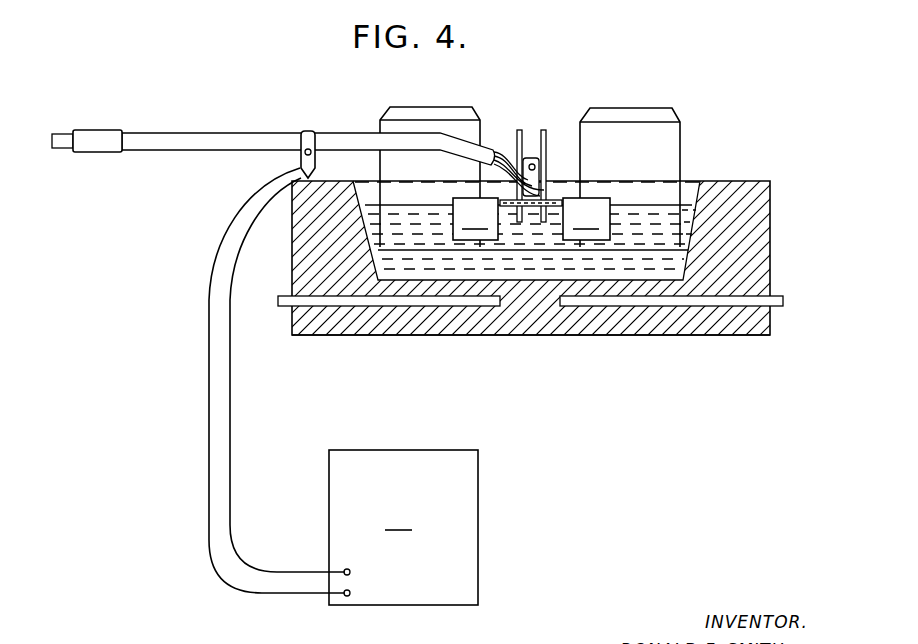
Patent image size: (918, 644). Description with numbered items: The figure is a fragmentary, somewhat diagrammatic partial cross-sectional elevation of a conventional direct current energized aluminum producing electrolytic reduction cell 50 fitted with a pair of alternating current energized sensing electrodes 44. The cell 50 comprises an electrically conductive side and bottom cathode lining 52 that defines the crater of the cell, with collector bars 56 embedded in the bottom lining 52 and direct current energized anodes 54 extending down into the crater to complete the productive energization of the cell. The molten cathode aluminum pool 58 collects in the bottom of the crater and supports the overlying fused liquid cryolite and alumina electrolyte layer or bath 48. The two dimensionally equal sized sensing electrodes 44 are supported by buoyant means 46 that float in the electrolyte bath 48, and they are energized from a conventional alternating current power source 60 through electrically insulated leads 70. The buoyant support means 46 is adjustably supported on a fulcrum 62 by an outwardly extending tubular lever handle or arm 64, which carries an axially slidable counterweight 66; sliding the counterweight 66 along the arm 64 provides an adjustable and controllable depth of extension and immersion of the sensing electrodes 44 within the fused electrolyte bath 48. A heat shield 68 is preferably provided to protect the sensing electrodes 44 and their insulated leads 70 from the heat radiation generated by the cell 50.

The sensing electrodes 44 is at (545, 128).
The buoyant means 46 is at (531, 219).
The electrolyte bath 48 is at (688, 215).
The electrolytic reduction cell 50 is at (772, 238).
The cathode lining 52 is at (725, 335).
The anodes 54 is at (423, 122).
The collector bars 56 is at (367, 306).
The molten cathode aluminum pool 58 is at (532, 272).
The alternating current power source 60 is at (403, 527).
The fulcrum 62 is at (298, 158).
The tubular lever handle or arm 64 is at (187, 131).
The counterweight 66 is at (93, 129).
The heat shield 68 is at (562, 152).
The electrically insulated leads 70 is at (228, 432).